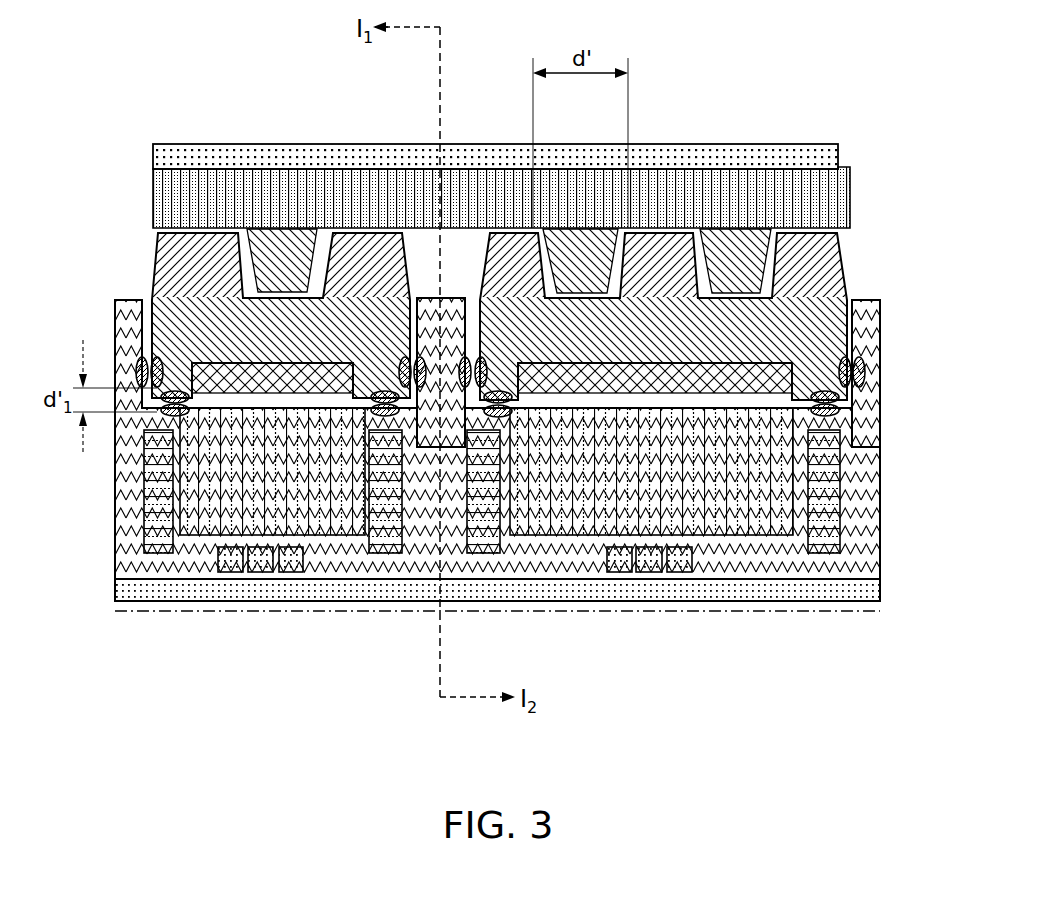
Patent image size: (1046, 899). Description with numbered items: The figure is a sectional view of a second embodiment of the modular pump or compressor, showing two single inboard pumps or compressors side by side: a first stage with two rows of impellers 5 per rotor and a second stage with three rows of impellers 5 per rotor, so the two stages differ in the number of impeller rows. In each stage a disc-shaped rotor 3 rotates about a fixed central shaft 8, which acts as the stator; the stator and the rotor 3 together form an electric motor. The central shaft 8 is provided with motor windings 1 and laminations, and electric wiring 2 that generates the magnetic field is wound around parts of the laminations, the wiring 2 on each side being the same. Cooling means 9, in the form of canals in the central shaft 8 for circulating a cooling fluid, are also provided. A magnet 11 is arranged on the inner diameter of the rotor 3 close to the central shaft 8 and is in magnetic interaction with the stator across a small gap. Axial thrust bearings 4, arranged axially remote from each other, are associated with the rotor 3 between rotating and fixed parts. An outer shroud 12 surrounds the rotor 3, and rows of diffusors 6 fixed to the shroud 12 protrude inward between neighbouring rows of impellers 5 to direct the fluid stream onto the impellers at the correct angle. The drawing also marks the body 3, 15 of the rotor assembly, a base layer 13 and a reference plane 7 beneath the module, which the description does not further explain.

The motor winding 1 is at (787, 531).
The electric wiring 2 is at (825, 471).
The rotor 3 is at (552, 286).
The axial thrust bearing 4 is at (137, 391).
The row of impellers 5 is at (509, 236).
The row of diffusors 6 is at (727, 243).
The mounting plane 7 is at (717, 590).
The central shaft 8 is at (345, 558).
The cooling means 9 is at (233, 563).
The magnet 11 is at (203, 373).
The outer shroud 12 is at (575, 145).
The rear-side contact layer 13 is at (865, 611).
The active region 15 is at (833, 333).